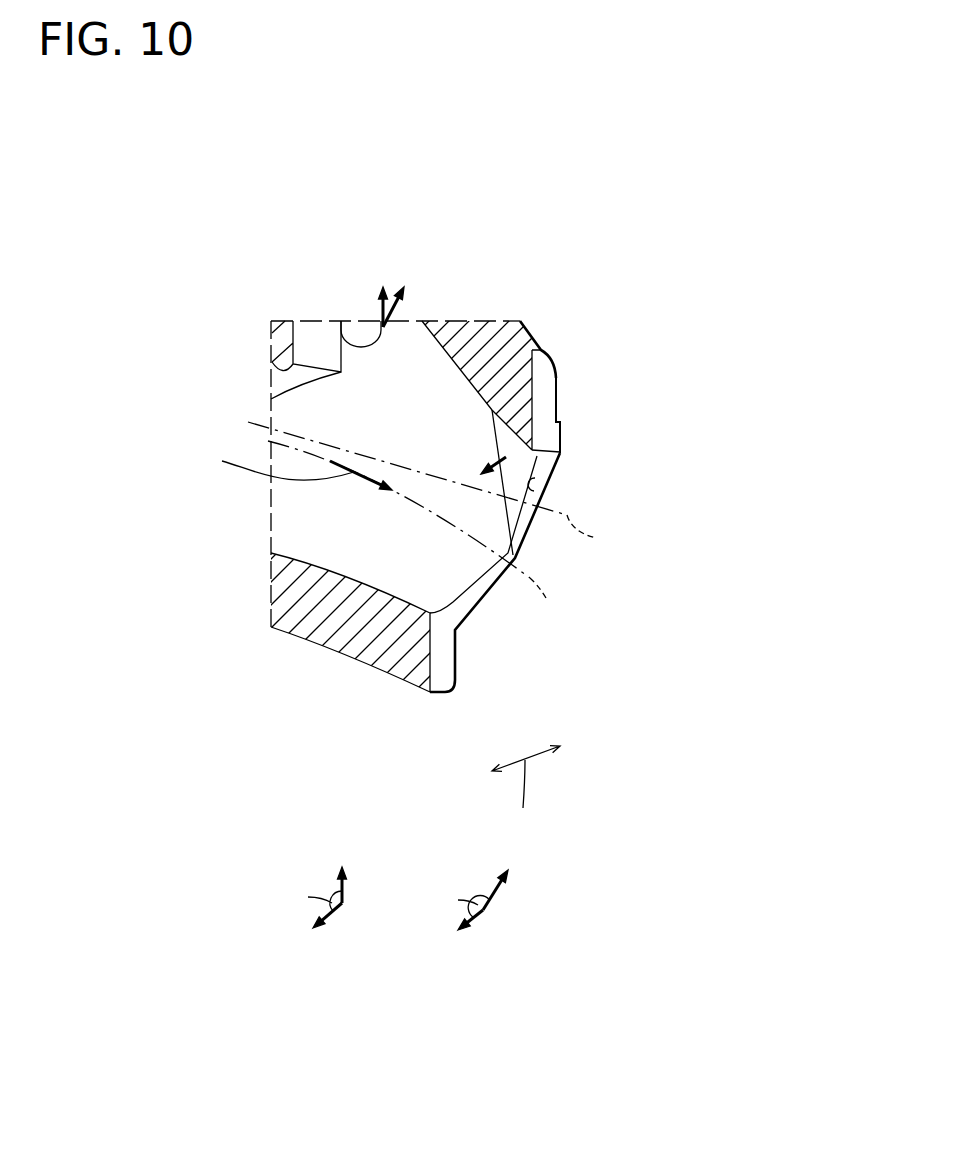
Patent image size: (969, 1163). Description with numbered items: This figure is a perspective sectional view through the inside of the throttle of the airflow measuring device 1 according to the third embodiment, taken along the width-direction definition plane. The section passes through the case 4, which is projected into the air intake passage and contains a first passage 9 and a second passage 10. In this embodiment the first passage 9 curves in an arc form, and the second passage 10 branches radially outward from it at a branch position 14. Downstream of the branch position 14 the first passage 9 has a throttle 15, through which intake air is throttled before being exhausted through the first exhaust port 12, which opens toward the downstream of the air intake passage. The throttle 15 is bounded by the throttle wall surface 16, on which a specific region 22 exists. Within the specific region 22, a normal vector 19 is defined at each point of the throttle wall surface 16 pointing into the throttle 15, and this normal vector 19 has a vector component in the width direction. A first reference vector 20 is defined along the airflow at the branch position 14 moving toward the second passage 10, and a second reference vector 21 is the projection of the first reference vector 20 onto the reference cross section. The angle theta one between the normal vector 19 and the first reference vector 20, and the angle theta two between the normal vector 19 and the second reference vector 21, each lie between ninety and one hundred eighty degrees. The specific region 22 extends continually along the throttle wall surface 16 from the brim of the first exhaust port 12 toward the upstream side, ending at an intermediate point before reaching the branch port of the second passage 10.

The airflow measuring device 1 is at (605, 244).
The case 4 is at (213, 297).
The first passage 9 is at (285, 520).
The second passage 10 is at (356, 330).
The first exhaust port 12 is at (538, 489).
The branch position 14 is at (341, 338).
The throttle 15 is at (457, 393).
The throttle wall surface 16 is at (433, 367).
The normal vector 19 is at (506, 455).
The first reference vector 20 is at (400, 318).
The second reference vector 21 is at (382, 325).
The specific region 22 is at (533, 463).